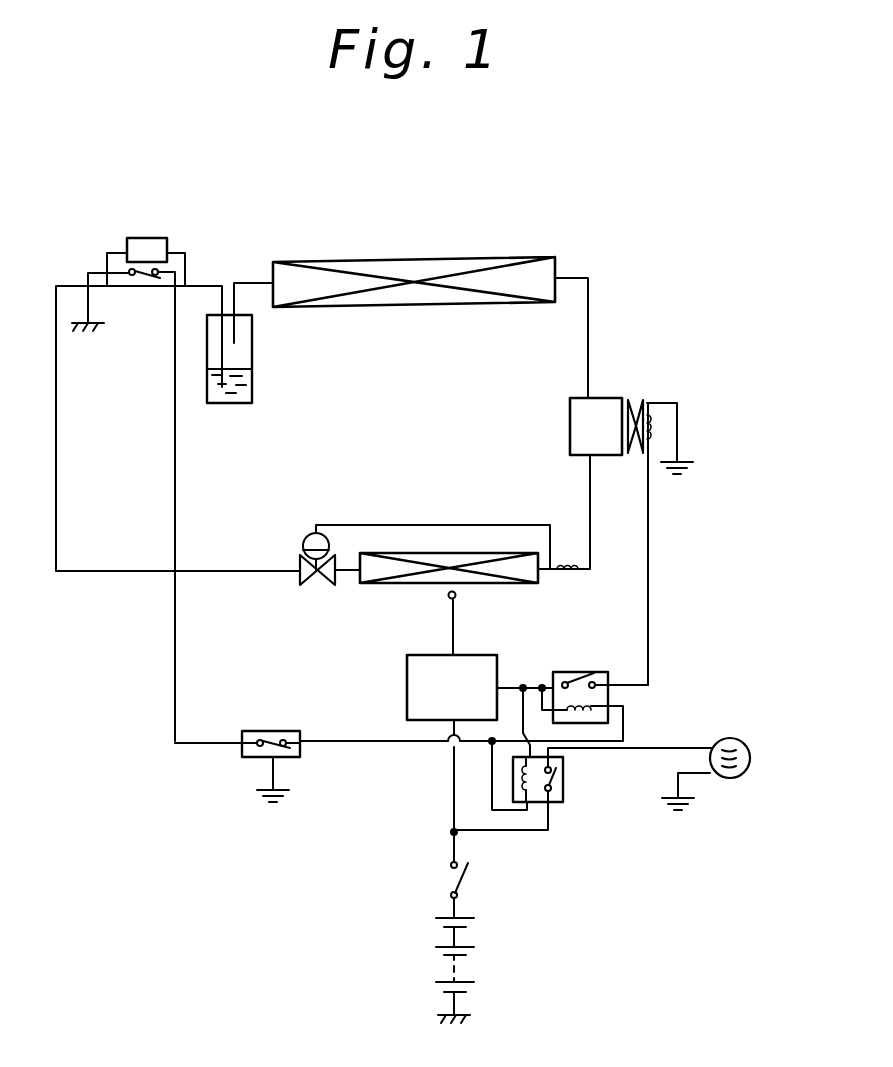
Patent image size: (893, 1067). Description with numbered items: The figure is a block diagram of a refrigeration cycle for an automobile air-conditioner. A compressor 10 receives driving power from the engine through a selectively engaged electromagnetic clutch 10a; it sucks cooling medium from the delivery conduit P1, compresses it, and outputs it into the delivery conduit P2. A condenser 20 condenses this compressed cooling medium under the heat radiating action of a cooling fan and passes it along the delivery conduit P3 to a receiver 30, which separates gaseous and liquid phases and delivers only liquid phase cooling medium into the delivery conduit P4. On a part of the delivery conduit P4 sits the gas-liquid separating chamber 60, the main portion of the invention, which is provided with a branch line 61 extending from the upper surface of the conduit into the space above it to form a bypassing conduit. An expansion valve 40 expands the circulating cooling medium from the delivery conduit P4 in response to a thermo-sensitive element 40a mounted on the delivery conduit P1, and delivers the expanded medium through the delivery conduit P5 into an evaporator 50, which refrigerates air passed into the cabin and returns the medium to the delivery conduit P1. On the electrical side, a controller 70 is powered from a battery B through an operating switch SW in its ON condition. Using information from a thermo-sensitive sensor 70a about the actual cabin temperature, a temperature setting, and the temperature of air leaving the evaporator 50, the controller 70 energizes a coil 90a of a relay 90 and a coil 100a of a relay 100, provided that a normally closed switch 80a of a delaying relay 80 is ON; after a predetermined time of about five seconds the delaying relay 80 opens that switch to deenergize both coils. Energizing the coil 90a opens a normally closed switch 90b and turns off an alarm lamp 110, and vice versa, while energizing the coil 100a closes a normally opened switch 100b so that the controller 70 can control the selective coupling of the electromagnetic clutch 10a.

The compressor 10 is at (570, 432).
The electromagnetic clutch 10a is at (657, 423).
The condenser 20 is at (423, 307).
The receiver 30 is at (255, 353).
The expansion valve 40 is at (316, 587).
The thermo-sensitive element 40a is at (567, 558).
The evaporator 50 is at (518, 583).
The gas-liquid separating chamber 60 is at (156, 229).
The branch line 61 is at (187, 262).
The controller 70 is at (407, 693).
The thermo-sensitive sensor 70a is at (455, 598).
The delaying relay 80 is at (292, 758).
The normally closed switch 80a is at (270, 737).
The relay 90 is at (555, 803).
The coil 90a is at (517, 778).
The normally closed switch 90b is at (563, 782).
The relay 100 is at (608, 672).
The coil 100a is at (608, 708).
The normally opened switch 100b is at (585, 657).
The alarm lamp 110 is at (750, 770).
The operating switch SW is at (467, 870).
The battery B is at (468, 933).
The delivery conduit P1 is at (595, 483).
The delivery conduit P2 is at (590, 315).
The delivery conduit P3 is at (257, 280).
The delivery conduit P4 is at (78, 432).
The delivery conduit P5 is at (350, 573).